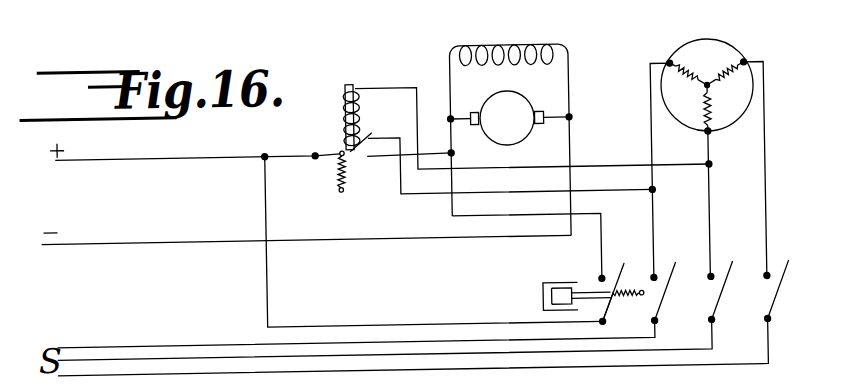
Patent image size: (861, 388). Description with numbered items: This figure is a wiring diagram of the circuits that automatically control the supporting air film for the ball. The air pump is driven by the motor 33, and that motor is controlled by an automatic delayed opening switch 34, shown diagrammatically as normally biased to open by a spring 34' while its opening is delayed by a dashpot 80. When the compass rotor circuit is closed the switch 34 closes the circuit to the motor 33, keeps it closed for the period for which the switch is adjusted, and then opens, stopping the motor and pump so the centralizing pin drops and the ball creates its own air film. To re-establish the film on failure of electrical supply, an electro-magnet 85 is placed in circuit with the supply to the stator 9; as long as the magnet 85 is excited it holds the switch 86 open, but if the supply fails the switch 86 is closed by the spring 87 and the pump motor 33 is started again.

The stator 9 is at (708, 157).
The motor 33 is at (524, 162).
The automatic delayed opening switch 34 is at (592, 288).
The spring 34' is at (622, 309).
The dashpot 80 is at (549, 298).
The electro-magnet 85 is at (345, 112).
The switch 86 is at (375, 126).
The spring 87 is at (336, 170).